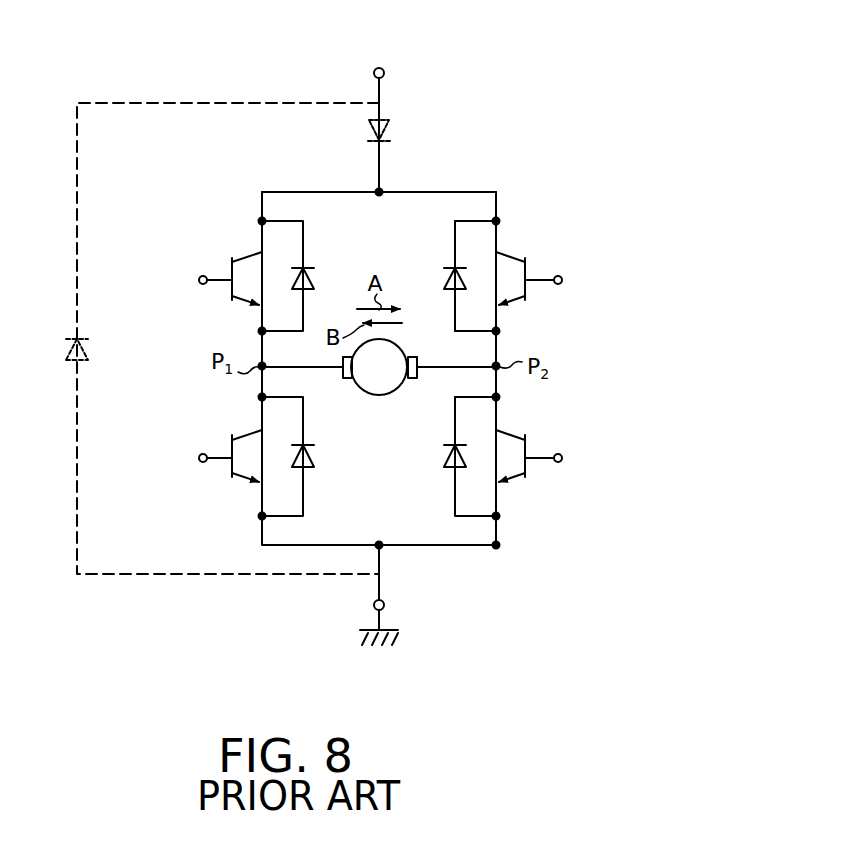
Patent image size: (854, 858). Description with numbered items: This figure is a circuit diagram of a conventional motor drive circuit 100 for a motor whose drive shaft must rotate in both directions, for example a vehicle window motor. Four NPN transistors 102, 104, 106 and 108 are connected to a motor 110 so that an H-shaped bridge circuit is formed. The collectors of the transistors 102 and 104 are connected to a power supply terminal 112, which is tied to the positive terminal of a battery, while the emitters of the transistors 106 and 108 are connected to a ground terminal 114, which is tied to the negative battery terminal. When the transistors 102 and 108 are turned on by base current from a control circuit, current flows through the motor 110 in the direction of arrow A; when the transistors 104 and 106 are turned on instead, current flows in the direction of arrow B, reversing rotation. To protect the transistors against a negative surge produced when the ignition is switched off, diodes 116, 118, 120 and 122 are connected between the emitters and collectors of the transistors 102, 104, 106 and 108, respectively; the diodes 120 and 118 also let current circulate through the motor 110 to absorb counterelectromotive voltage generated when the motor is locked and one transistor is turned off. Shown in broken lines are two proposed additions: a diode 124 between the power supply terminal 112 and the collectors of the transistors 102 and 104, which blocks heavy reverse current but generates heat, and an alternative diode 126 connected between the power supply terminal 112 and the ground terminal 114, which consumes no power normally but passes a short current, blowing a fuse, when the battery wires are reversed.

The drive circuit 100 is at (510, 88).
The transistor 102 is at (228, 264).
The transistor 104 is at (530, 262).
The transistor 106 is at (226, 468).
The transistor 108 is at (530, 468).
The motor 110 is at (379, 395).
The power supply terminal 112 is at (373, 72).
The ground terminal 114 is at (385, 608).
The diode 116 is at (314, 280).
The diode 118 is at (445, 282).
The diode 120 is at (312, 460).
The diode 122 is at (446, 460).
The diode 124 is at (389, 127).
The diode 126 is at (70, 350).